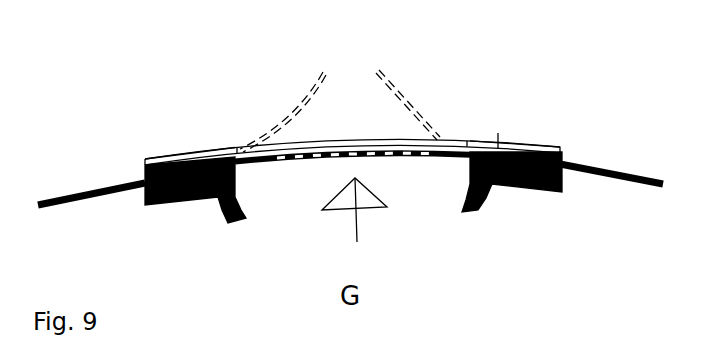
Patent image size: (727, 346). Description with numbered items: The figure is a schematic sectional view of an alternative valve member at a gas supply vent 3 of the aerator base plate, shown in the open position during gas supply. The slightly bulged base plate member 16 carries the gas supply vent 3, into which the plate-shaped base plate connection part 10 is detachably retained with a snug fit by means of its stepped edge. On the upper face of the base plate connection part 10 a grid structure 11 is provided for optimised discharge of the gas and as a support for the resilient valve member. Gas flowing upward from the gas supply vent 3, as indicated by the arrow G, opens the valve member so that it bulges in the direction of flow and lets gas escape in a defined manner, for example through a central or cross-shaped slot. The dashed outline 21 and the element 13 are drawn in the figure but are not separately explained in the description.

The gas supply vent 3 is at (302, 193).
The base plate connection part 10 is at (176, 162).
The grid structure 11 is at (422, 148).
The second clamping device 13 is at (532, 148).
The base plate member 16 is at (92, 187).
The bracket 21 is at (413, 105).